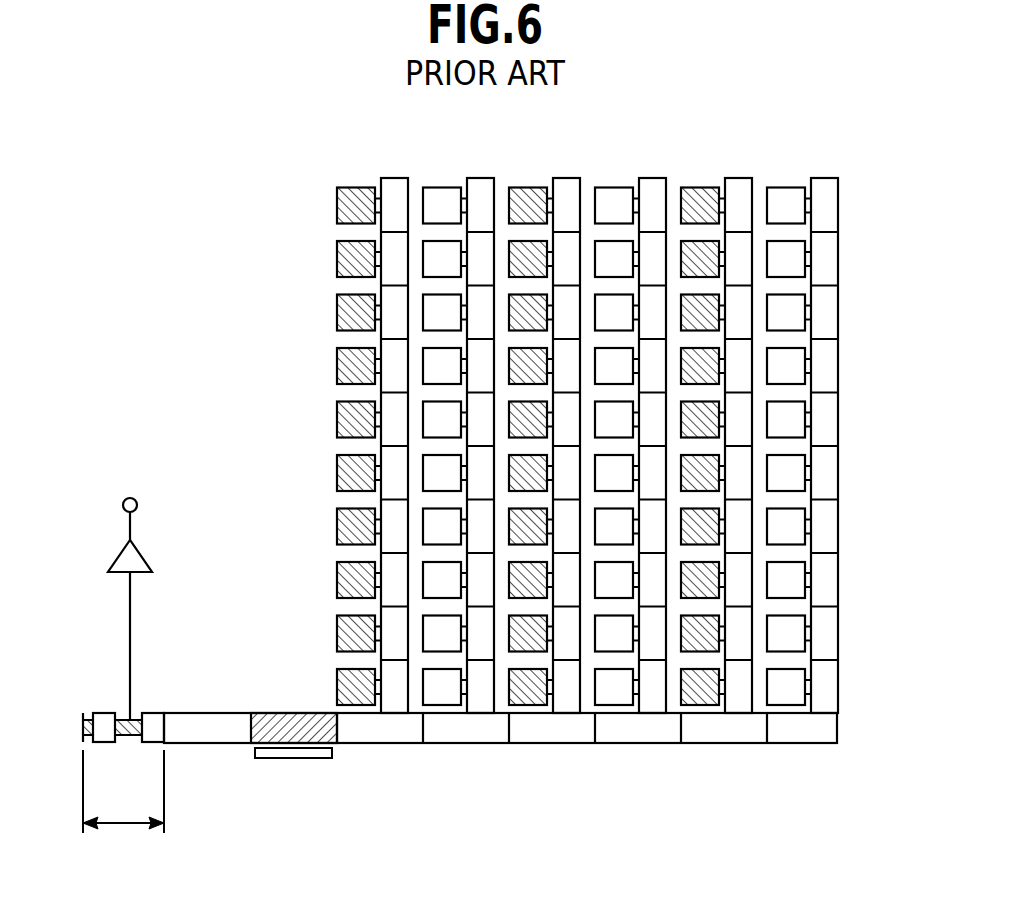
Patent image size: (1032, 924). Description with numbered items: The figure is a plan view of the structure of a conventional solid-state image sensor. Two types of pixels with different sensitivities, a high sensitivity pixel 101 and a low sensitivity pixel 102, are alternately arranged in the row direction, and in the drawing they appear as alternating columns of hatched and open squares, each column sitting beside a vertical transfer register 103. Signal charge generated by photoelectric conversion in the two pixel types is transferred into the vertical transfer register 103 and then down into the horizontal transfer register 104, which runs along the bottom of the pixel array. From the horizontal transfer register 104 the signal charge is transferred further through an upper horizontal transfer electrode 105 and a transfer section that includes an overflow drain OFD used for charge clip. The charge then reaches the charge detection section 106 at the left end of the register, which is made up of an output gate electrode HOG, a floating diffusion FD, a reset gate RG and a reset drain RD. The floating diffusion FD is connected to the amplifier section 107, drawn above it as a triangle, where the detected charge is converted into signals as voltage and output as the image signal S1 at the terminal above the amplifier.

The high sensitivity pixel 101 is at (337, 366).
The low sensitivity pixel 102 is at (442, 196).
The vertical transfer register 103 is at (832, 210).
The horizontal transfer register 104 is at (558, 744).
The upper horizontal transfer electrode 105 is at (285, 713).
The charge detection section 106 is at (123, 812).
The amplifier section 107 is at (152, 560).
The image signal S1 is at (140, 514).
The reset drain RD is at (88, 715).
The reset gate RG is at (94, 713).
The output gate electrode HOG is at (152, 713).
The floating diffusion FD is at (128, 746).
The overflow drain OFD is at (299, 760).